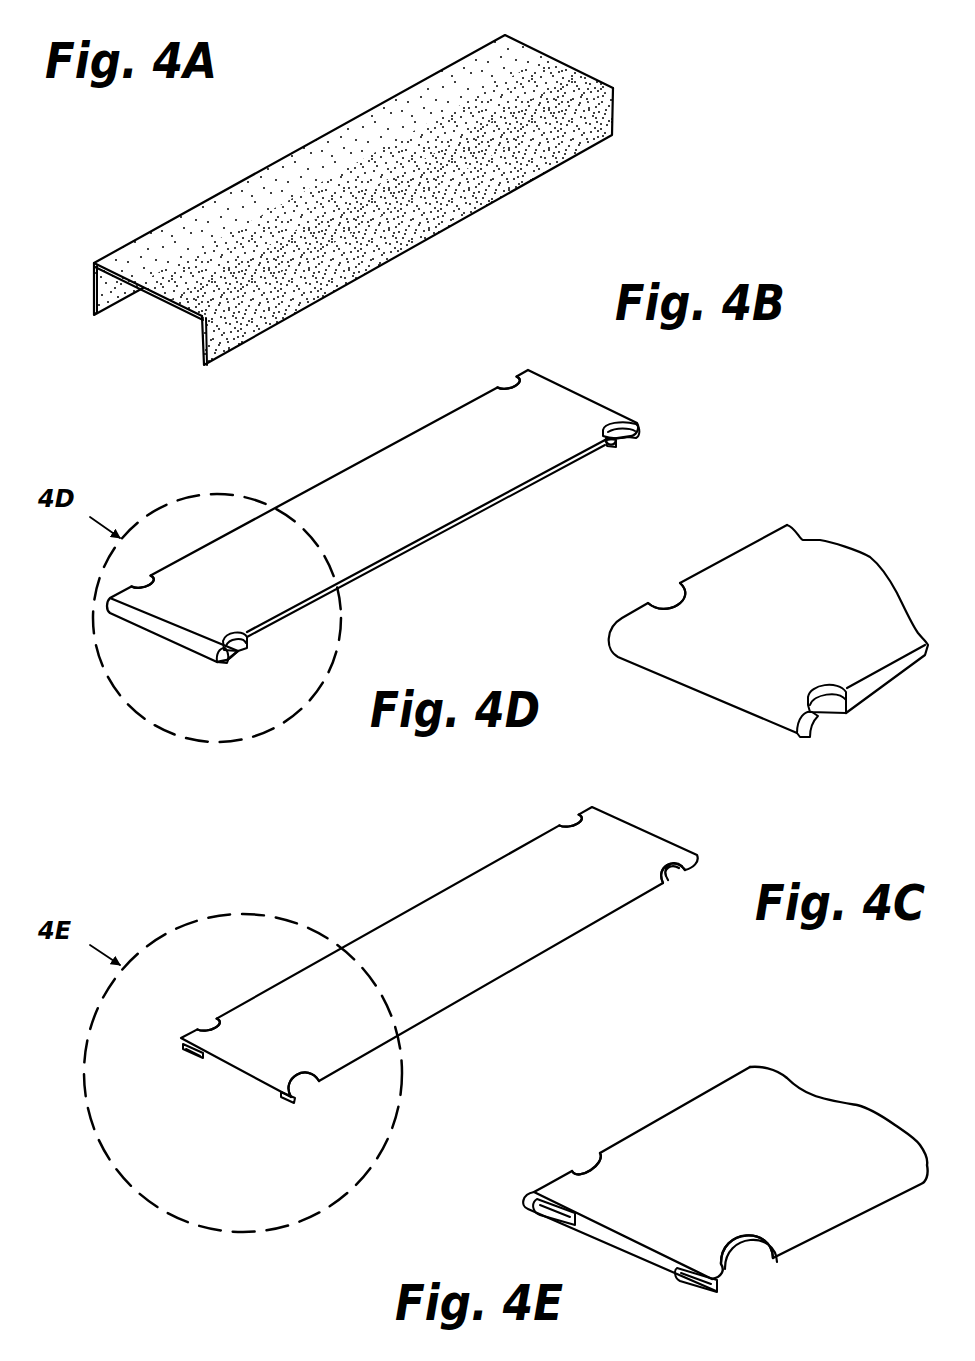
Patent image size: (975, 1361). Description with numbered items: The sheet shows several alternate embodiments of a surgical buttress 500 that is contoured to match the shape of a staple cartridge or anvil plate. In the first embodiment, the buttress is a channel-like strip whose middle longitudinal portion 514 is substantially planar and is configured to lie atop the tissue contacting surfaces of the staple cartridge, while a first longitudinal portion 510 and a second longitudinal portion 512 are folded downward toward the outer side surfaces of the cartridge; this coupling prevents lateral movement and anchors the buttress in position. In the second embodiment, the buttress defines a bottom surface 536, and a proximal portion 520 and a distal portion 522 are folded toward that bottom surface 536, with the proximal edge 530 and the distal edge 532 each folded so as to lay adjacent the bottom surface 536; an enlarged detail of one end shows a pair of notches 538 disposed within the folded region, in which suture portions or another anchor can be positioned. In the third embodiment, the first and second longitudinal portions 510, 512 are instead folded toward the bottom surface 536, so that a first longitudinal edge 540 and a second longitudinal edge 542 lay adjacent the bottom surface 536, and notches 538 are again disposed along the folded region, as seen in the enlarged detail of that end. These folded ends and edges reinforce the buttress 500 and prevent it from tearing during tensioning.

In FIG. 4A, the surgical buttress 500 is at (321, 197).
In FIG. 4B, the surgical buttress 500 is at (411, 525).
In FIG. 4C, the surgical buttress 500 is at (401, 964).
In FIG. 4A, the first longitudinal portion 510 is at (222, 337).
In FIG. 4C, the first longitudinal portion 510 is at (275, 1129).
In FIG. 4A, the second longitudinal portion 512 is at (90, 292).
In FIG. 4C, the second longitudinal portion 512 is at (155, 1092).
In FIG. 4A, the middle longitudinal portion 514 is at (530, 73).
In FIG. 4C, the middle longitudinal portion 514 is at (603, 850).
In FIG. 4B, the proximal portion 520 is at (638, 438).
In FIG. 4B, the distal portion 522 is at (224, 664).
In FIG. 4D, the distal portion 522 is at (807, 740).
In FIG. 4B, the proximal edge 530 is at (608, 448).
In FIG. 4B, the distal edge 532 is at (248, 636).
In FIG. 4D, the distal edge 532 is at (867, 697).
In FIG. 4B, the bottom surface 536 is at (404, 557).
In FIG. 4B, the notches 538 is at (504, 378).
In FIG. 4D, the notches 538 is at (657, 598).
In FIG. 4C, the notches 538 is at (568, 812).
In FIG. 4E, the notches 538 is at (572, 1166).
In FIG. 4C, the first longitudinal edge 540 is at (263, 1092).
In FIG. 4C, the second longitudinal edge 542 is at (207, 1058).